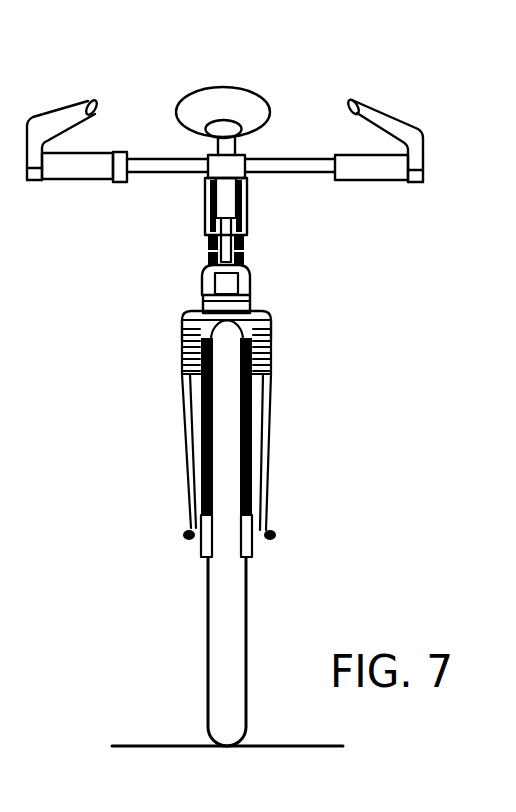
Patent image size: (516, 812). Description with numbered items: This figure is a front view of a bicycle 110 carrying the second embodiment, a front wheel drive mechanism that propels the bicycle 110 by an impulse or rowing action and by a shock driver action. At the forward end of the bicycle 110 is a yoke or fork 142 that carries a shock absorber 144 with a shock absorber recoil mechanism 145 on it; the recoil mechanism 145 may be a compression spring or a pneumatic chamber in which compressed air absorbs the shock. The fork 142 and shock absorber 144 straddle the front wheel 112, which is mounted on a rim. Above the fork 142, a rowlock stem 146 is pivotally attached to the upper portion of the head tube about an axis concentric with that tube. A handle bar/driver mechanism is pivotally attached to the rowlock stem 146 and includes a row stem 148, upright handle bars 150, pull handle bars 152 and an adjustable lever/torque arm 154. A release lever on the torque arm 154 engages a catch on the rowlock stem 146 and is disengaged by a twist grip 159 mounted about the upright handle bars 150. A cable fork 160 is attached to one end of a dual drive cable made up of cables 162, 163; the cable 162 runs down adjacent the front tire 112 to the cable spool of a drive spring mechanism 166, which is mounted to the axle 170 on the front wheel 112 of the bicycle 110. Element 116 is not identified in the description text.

The bicycle 110 is at (410, 72).
The front wheel 112 is at (218, 652).
The handlebar mounted unit 116 is at (221, 104).
The fork 142 is at (262, 436).
The shock absorber 144 is at (266, 345).
The shock absorber recoil mechanism 145 is at (185, 345).
The rowlock stem 146 is at (205, 200).
The row stem 148 is at (226, 193).
The upright handle bars 150 is at (382, 168).
The pull handle bars 152 is at (57, 125).
The adjustable lever/torque arm 154 is at (227, 237).
The twist grip 159 is at (74, 166).
The cable fork 160 is at (250, 272).
The cable 162 is at (200, 302).
The cable 163 is at (255, 298).
The drive spring mechanism 166 is at (206, 550).
The axle 170 is at (278, 536).